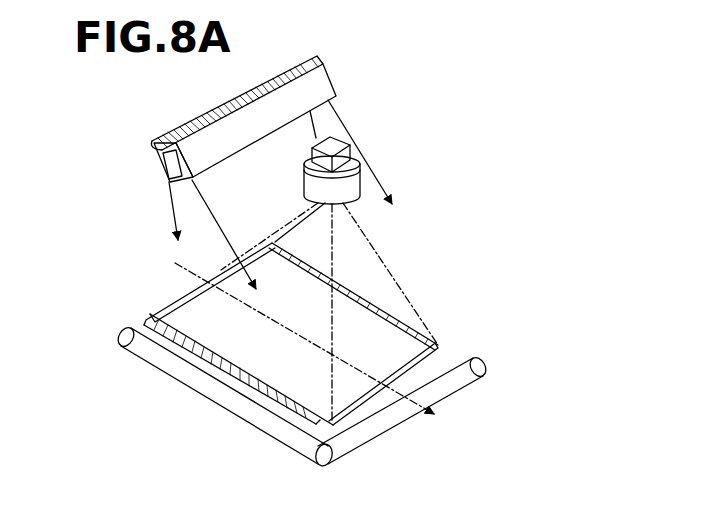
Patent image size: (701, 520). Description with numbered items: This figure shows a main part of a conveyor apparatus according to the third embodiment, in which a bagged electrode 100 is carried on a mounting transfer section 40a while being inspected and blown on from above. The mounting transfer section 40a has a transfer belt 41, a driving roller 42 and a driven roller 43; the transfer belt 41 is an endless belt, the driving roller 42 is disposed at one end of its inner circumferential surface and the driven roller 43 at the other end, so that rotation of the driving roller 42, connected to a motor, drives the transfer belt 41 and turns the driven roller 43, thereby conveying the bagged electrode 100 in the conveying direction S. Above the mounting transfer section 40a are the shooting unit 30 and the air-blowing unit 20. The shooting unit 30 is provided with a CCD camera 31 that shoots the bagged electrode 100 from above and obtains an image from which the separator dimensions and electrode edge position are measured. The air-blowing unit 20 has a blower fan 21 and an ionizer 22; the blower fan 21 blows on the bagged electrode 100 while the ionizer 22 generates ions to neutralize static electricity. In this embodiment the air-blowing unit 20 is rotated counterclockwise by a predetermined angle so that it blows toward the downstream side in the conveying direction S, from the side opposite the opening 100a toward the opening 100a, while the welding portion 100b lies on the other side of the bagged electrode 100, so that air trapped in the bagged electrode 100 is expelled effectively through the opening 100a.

The air-blowing unit 20 is at (150, 124).
The blower fan 21 is at (160, 152).
The ionizer 22 is at (173, 170).
The shooting unit 30 is at (372, 143).
The CCD camera 31 is at (349, 187).
The mounting transfer section 40a is at (271, 416).
The transfer belt 41 is at (230, 387).
The driving roller 42 is at (314, 466).
The driven roller 43 is at (120, 342).
The bagged electrode 100 is at (299, 334).
The opening 100a is at (397, 365).
The welding portion 100b is at (200, 285).
The conveying direction S is at (317, 350).